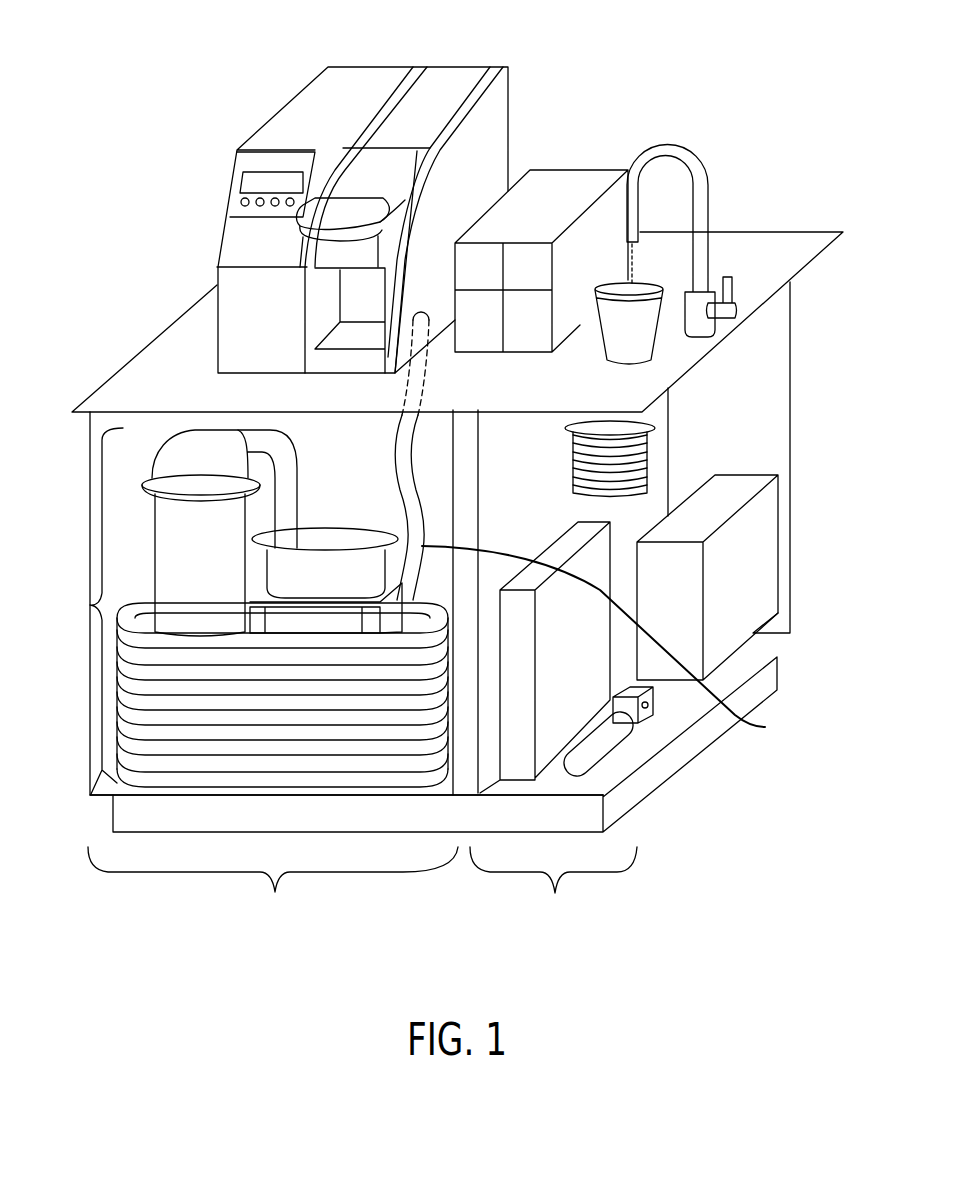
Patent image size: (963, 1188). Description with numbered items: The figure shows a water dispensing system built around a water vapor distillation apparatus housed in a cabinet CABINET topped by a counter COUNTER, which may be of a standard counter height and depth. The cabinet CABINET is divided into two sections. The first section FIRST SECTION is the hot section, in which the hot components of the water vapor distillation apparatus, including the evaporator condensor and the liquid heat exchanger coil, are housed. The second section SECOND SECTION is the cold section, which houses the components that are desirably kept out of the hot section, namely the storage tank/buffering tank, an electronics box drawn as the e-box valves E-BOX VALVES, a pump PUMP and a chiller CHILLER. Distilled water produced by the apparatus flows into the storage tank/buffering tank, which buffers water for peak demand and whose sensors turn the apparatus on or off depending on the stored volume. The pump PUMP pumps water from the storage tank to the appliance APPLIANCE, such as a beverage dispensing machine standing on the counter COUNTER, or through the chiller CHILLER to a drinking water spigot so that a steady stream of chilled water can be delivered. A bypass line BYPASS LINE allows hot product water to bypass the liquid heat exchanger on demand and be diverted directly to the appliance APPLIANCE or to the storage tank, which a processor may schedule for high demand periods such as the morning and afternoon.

The appliance APPLIANCE is at (448, 82).
The counter COUNTER is at (781, 252).
The cabinet CABINET is at (780, 361).
The chiller CHILLER is at (647, 455).
The bypass line BYPASS LINE is at (650, 643).
The pump PUMP is at (620, 730).
The electronics box E-BOX VALVES is at (547, 680).
The first section FIRST SECTION is at (271, 860).
The second section SECOND SECTION is at (541, 860).